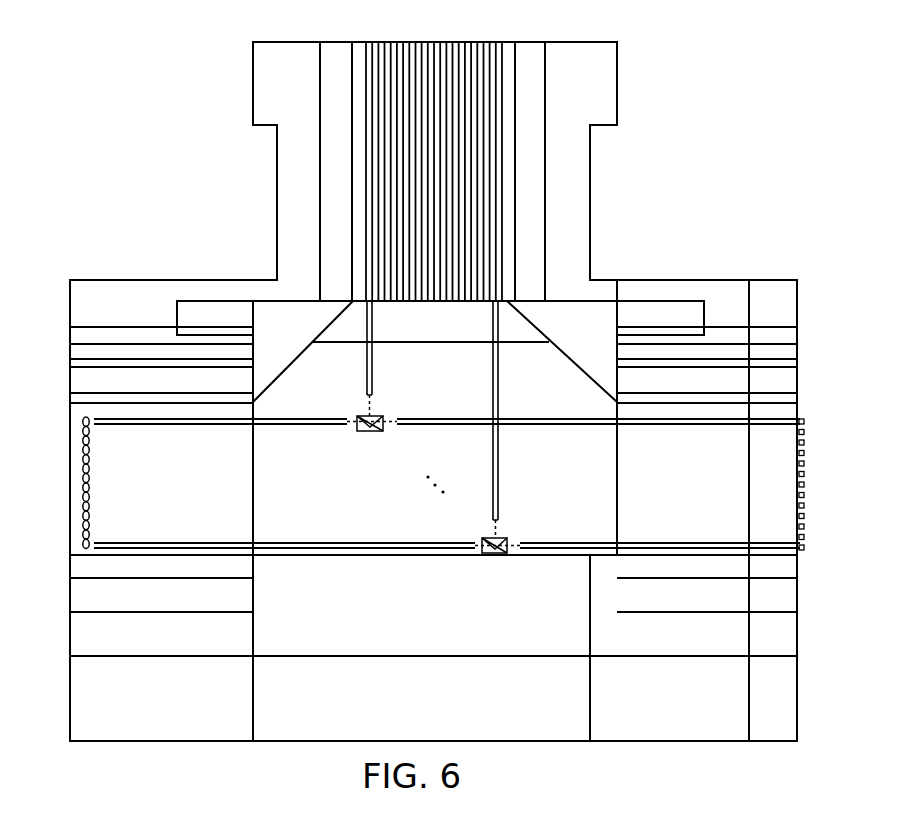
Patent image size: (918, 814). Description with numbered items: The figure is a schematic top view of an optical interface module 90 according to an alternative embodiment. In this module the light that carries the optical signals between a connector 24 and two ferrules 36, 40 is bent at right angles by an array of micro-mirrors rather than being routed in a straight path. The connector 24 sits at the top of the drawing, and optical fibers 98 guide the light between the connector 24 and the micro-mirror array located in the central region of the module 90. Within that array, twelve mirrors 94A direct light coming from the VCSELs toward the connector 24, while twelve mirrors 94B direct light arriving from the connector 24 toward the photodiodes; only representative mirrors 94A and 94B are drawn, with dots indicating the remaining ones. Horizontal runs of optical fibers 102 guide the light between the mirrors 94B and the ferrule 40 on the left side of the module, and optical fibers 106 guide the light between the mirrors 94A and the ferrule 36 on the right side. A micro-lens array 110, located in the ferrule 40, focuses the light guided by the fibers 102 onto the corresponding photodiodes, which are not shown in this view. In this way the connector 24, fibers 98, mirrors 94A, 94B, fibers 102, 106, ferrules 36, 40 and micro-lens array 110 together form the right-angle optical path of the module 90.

The optical interface module 90 is at (124, 81).
The connector 24 is at (331, 62).
The optical fibers 98 is at (492, 330).
The ferrule 40 is at (75, 397).
The ferrule 36 is at (787, 397).
The micro-lens array 110 is at (63, 420).
The optical fibers 102 is at (284, 425).
The optical fibers 106 is at (590, 425).
The mirrors 94A is at (368, 432).
The mirrors 94B is at (383, 428).